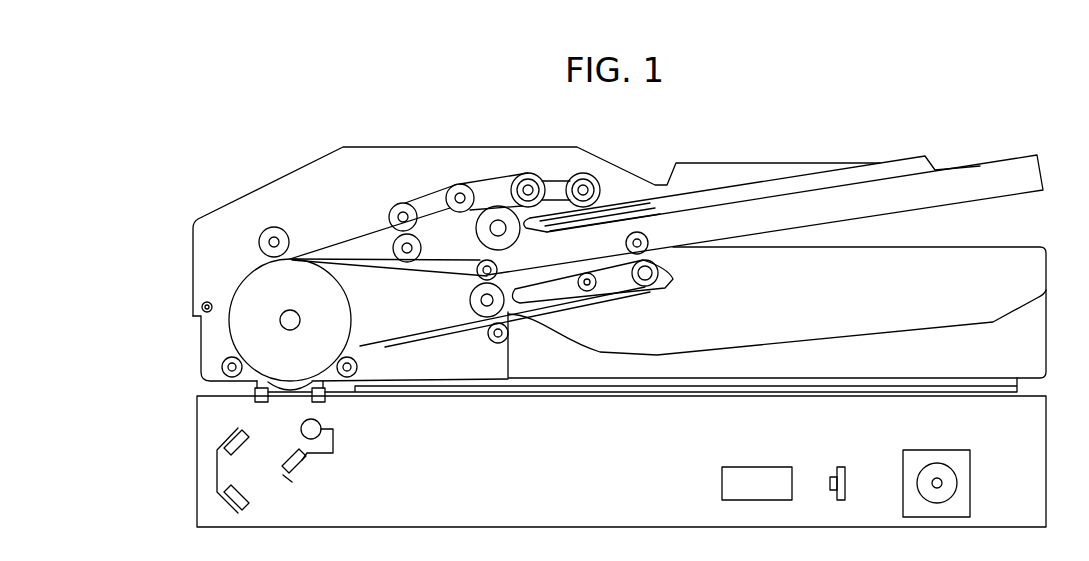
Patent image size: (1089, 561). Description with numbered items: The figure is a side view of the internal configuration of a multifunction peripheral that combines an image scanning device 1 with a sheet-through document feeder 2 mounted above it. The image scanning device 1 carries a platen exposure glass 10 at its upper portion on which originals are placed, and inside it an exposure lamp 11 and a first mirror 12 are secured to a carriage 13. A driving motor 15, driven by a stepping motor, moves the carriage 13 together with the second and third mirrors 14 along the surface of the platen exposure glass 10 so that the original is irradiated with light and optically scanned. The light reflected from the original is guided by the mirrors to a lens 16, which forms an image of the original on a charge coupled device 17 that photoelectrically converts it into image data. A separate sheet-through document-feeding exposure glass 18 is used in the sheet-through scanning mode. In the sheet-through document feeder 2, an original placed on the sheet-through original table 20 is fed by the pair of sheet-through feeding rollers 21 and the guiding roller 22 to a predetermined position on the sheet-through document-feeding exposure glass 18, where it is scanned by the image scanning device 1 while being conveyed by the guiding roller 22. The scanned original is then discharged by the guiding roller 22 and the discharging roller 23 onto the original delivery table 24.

The image scanning device 1 is at (1046, 466).
The sheet-through document feeder 2 is at (1000, 247).
The platen exposure glass 10 is at (622, 398).
The exposure lamp 11 is at (333, 429).
The first mirror 12 is at (298, 478).
The carriage 13 is at (327, 458).
The second mirror and third mirror 14 is at (217, 468).
The driving motor 15 is at (945, 449).
The lens 16 is at (780, 452).
The charge coupled device 17 is at (843, 465).
The sheet-through document-feeding exposure glass 18 is at (284, 403).
The sheet-through original table 20 is at (820, 173).
The sheet-through feeding rollers 21 is at (585, 174).
The guiding roller 22 is at (247, 277).
The discharging roller 23 is at (470, 300).
The original delivery table 24 is at (688, 356).